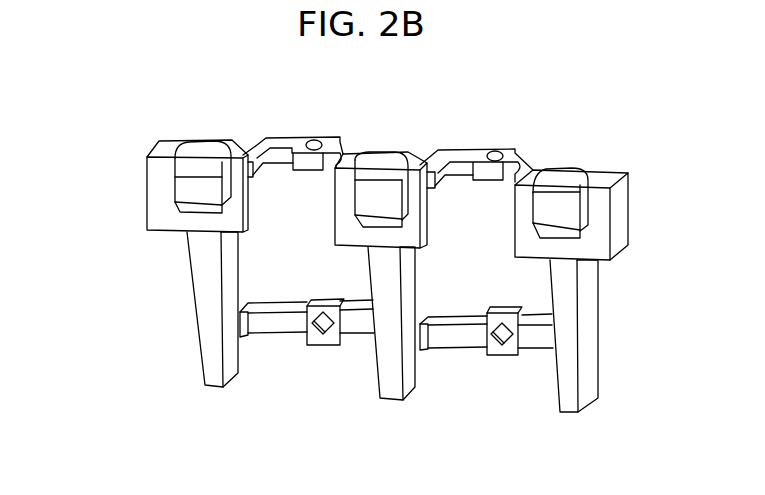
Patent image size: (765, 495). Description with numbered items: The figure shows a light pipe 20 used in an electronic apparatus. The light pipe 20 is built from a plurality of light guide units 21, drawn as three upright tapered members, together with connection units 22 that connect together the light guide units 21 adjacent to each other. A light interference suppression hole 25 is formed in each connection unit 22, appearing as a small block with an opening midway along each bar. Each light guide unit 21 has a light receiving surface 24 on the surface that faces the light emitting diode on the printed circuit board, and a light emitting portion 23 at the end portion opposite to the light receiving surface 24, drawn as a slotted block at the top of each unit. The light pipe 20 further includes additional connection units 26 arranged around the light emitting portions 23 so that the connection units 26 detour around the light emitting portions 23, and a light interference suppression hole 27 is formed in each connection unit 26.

The light pipe 20 is at (111, 95).
The light guide unit 21 is at (213, 360).
The connection unit 22 is at (271, 320).
The light emitting portion 23 is at (199, 183).
The light receiving surface 24 is at (230, 380).
The light interference suppression hole 25 is at (319, 345).
The connection unit 26 is at (272, 143).
The light interference suppression hole 27 is at (318, 141).